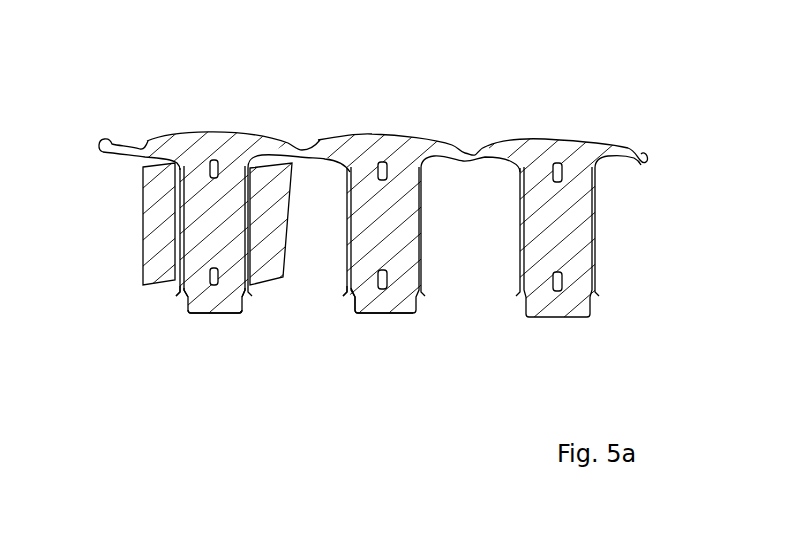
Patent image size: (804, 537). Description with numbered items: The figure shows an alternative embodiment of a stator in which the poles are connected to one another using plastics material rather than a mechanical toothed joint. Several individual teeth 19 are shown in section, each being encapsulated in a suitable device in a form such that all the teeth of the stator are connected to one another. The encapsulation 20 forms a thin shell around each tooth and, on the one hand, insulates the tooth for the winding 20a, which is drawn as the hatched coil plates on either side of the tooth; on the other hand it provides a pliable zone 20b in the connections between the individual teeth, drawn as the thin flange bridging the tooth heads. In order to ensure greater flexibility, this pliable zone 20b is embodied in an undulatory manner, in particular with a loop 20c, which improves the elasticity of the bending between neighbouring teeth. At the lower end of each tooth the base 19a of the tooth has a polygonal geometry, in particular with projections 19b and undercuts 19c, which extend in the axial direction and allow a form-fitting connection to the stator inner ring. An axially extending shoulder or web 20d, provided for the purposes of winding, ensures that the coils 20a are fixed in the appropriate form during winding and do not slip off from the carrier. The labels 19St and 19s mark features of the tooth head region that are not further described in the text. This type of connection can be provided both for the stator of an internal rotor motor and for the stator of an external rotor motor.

The tooth 19 is at (347, 147).
The flange tip 19St is at (163, 135).
The head top of spacer element 19s is at (200, 147).
The base of the tooth 19a is at (355, 315).
The projections 19b is at (243, 310).
The undercuts 19c is at (182, 293).
The encapsulation 20 is at (595, 252).
The winding 20a is at (152, 235).
The pliable zone 20b is at (300, 147).
The loop 20c is at (473, 152).
The shoulder or web 20d is at (178, 288).